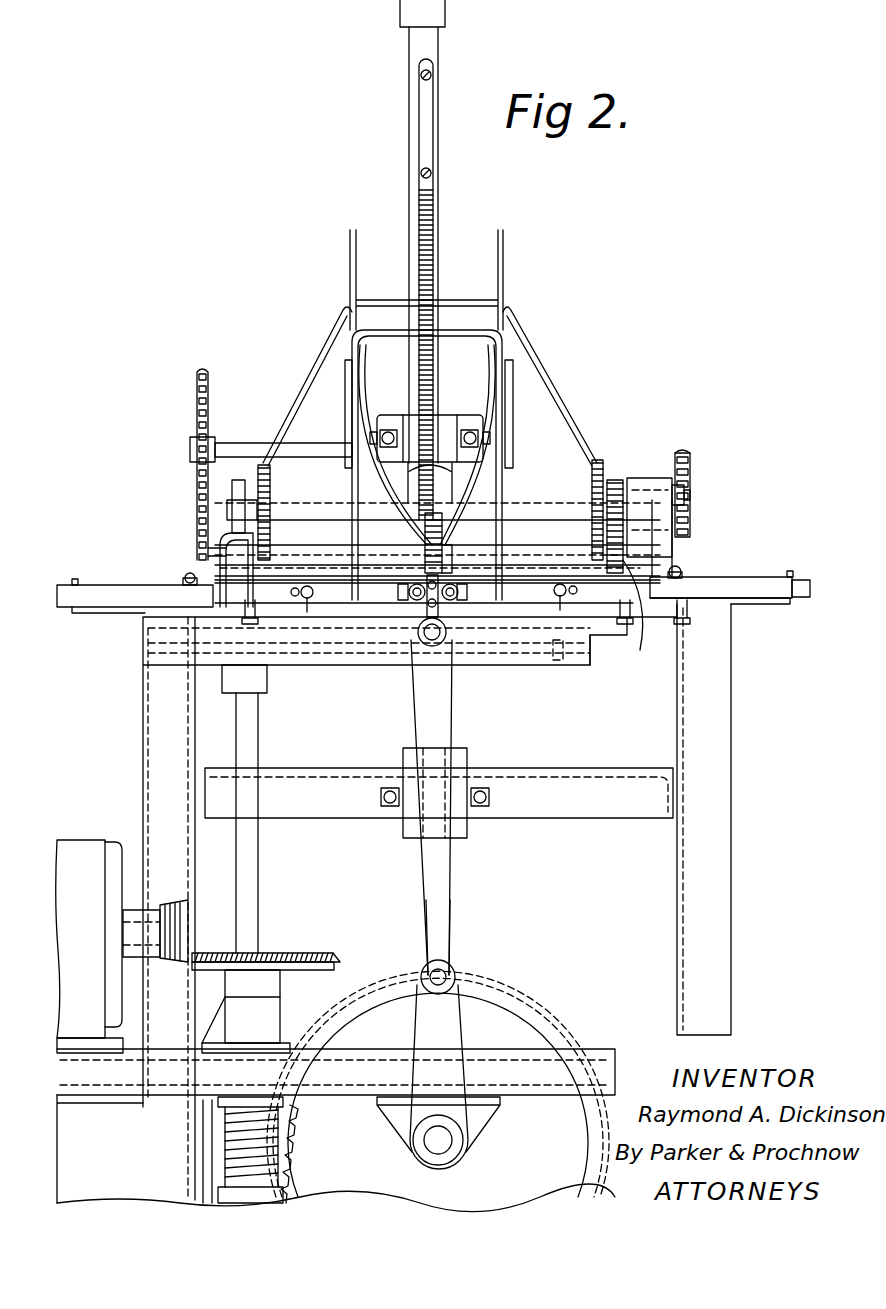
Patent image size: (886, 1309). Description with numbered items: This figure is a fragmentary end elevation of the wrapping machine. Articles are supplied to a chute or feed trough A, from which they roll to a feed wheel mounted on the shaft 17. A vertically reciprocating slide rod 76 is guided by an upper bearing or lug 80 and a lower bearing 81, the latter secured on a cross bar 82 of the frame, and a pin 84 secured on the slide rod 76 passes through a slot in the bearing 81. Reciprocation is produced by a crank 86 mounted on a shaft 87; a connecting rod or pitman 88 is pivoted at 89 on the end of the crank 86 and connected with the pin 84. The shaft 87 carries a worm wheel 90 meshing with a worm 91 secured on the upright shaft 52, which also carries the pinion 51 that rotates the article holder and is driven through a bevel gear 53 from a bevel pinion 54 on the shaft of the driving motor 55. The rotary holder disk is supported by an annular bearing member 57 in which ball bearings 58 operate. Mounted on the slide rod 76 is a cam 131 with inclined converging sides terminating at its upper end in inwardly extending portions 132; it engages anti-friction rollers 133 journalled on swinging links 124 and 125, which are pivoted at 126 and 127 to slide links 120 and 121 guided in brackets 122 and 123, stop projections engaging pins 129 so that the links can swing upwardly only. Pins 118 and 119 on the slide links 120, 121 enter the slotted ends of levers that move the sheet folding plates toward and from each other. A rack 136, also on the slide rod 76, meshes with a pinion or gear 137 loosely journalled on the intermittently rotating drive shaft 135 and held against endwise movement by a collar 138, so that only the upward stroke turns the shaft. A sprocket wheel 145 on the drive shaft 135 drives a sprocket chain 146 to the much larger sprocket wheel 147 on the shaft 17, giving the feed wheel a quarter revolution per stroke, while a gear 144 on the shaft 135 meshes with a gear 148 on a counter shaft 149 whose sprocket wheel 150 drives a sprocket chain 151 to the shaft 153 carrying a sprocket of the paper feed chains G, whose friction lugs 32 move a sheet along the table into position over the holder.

The shaft 17 is at (238, 443).
The friction lugs 32 is at (264, 465).
The pinion 51 is at (180, 638).
The upright shaft 52 is at (258, 720).
The bevel gear 53 is at (300, 957).
The bevel pinion 54 is at (150, 905).
The driving motor 55 is at (62, 845).
The annular bearing member 57 is at (588, 665).
The ball bearings 58 is at (557, 660).
The slide rod 76 is at (437, 230).
The bearing 80 is at (448, 420).
The bearing 81 is at (468, 755).
The cross bar 82 is at (535, 785).
The pin 84 is at (440, 640).
The crank 86 is at (500, 1018).
The shaft 87 is at (438, 1140).
The connecting rod 88 is at (450, 875).
The pivot 89 is at (450, 972).
The worm wheel 90 is at (560, 1025).
The worm 91 is at (278, 1155).
The pin 118 is at (183, 580).
The pin 119 is at (680, 568).
The slide link 120 is at (100, 585).
The slide link 121 is at (705, 577).
The bracket 122 is at (85, 613).
The bracket 123 is at (775, 604).
The swinging link 124 is at (376, 592).
The swinging link 125 is at (484, 590).
The pivot 126 is at (307, 612).
The pivot 127 is at (560, 610).
The pins 129 is at (291, 592).
The cam 131 is at (365, 405).
The inwardly extending portions 132 is at (428, 465).
The anti-friction rollers 133 is at (453, 605).
The drive shaft 135 is at (275, 556).
The rack 136 is at (436, 193).
The pinion 137 is at (452, 560).
The collar 138 is at (425, 557).
The gear 144 is at (651, 617).
The sprocket wheel 145 is at (210, 560).
The sprocket chain 146 is at (197, 490).
The sprocket wheel 147 is at (200, 370).
The gear 148 is at (613, 478).
The counter shaft 149 is at (692, 495).
The sprocket wheel 150 is at (683, 450).
The sprocket chain 151 is at (690, 462).
The shaft 153 is at (520, 502).
The chute A is at (505, 275).
The chains G is at (262, 490).